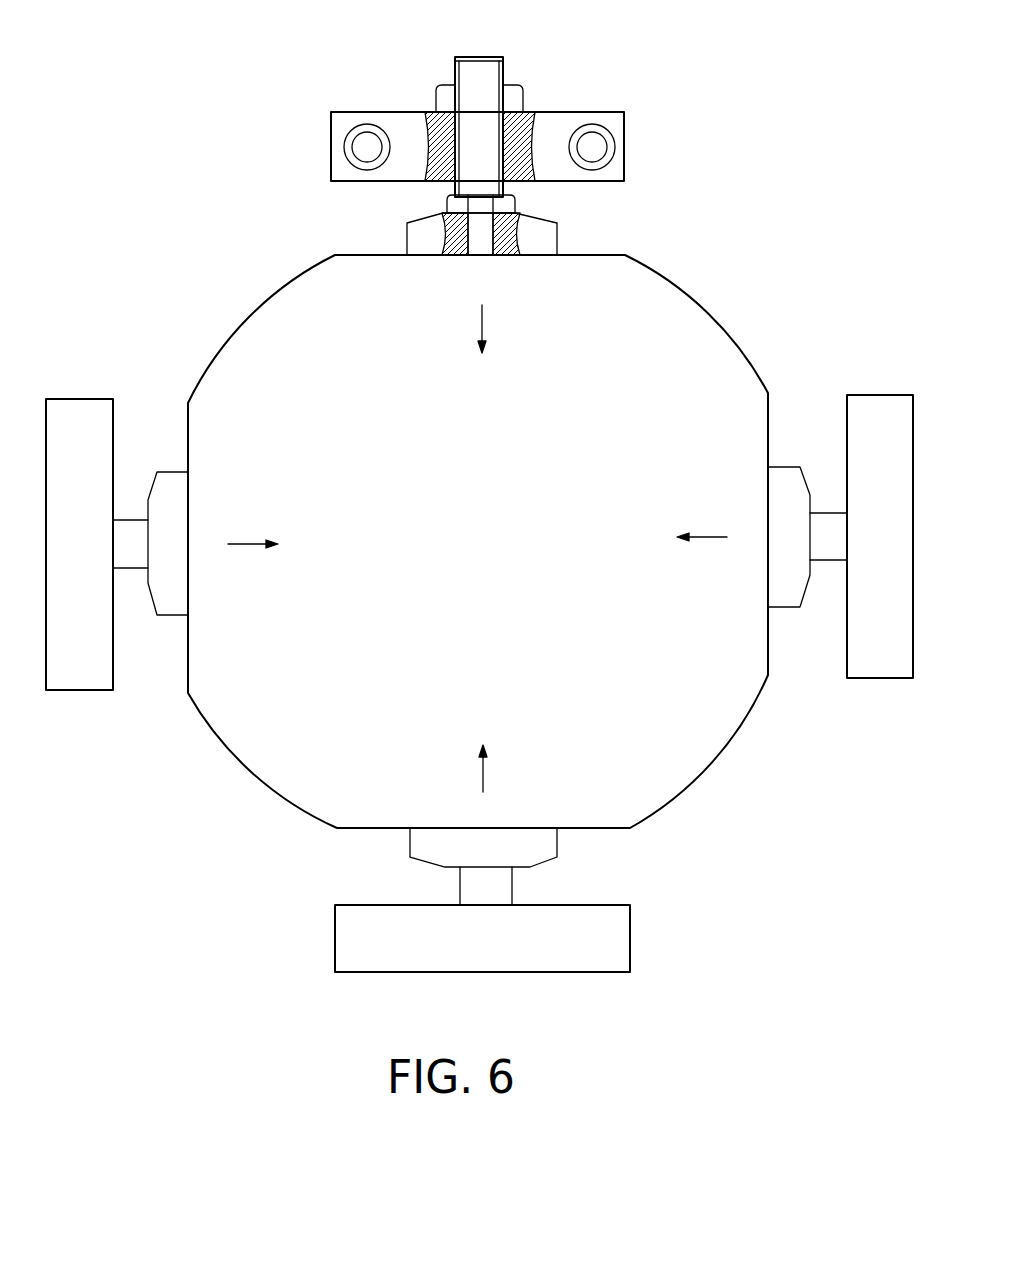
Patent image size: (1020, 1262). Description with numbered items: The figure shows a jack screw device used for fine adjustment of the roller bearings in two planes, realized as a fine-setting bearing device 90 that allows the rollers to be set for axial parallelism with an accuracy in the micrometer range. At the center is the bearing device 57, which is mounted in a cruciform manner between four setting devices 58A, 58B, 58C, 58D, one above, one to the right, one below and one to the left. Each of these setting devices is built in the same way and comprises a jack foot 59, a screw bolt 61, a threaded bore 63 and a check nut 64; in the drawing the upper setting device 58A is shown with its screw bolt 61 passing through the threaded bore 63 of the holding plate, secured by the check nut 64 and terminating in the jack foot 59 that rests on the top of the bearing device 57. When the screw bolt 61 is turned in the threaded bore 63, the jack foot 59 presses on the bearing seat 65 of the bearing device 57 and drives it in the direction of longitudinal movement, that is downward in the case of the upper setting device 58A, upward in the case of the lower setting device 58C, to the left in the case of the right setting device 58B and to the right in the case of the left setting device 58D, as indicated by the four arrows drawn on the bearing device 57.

The fine-setting bearing device 90 is at (237, 144).
The bearing device 57 is at (710, 413).
The upper setting device 58A is at (583, 83).
The setting device 58B is at (805, 633).
The setting device 58C is at (413, 878).
The setting device 58D is at (132, 503).
The jack foot 59 is at (543, 238).
The screw bolt 61 is at (478, 72).
The threaded bore 63 is at (430, 110).
The check nut 64 is at (517, 93).
The bearing seat 65 is at (345, 251).